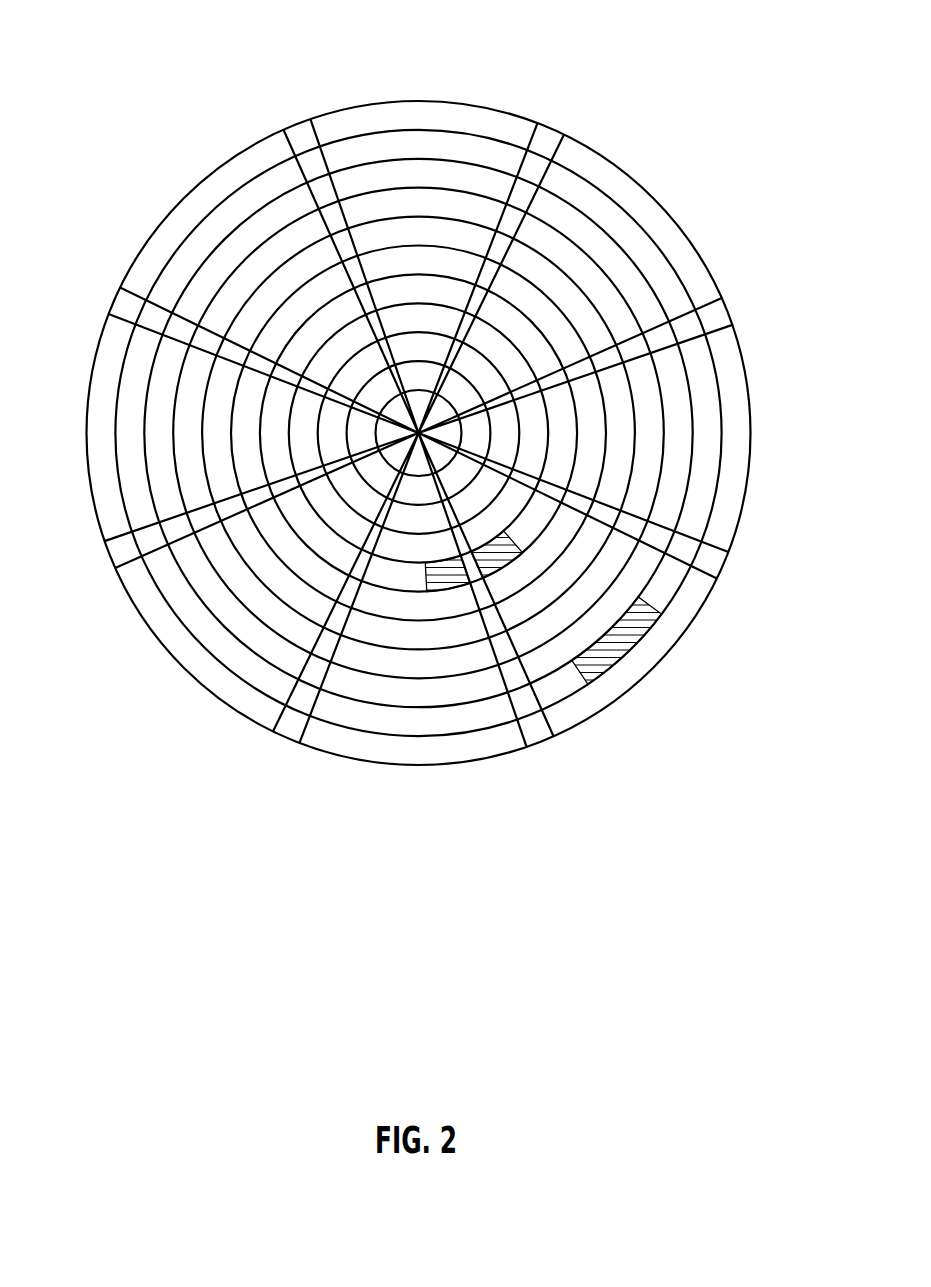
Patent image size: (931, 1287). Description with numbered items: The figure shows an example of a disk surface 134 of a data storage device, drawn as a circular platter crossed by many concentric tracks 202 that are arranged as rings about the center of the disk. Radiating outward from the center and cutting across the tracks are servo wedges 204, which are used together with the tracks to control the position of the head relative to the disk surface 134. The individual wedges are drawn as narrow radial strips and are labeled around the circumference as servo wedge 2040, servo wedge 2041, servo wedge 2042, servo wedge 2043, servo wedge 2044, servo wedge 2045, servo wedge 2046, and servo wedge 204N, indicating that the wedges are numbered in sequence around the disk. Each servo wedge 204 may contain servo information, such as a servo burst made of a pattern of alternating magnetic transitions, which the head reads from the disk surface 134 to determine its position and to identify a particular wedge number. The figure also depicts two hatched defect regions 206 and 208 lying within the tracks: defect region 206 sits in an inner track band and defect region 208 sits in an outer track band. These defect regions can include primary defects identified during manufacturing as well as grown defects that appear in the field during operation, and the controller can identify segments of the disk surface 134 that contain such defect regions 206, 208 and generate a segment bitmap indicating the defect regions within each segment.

The disk surface 134 is at (426, 433).
The concentric tracks 202 is at (437, 150).
The servo wedges 204 is at (426, 439).
The servo wedge 204N is at (305, 136).
The servo wedge 2040 is at (548, 138).
The servo wedge 2041 is at (723, 302).
The servo wedge 2042 is at (717, 565).
The servo wedge 2043 is at (535, 732).
The servo wedge 2044 is at (290, 727).
The servo wedge 2045 is at (112, 568).
The servo wedge 2046 is at (123, 300).
The defect region 206 is at (447, 588).
The defect region 208 is at (617, 668).